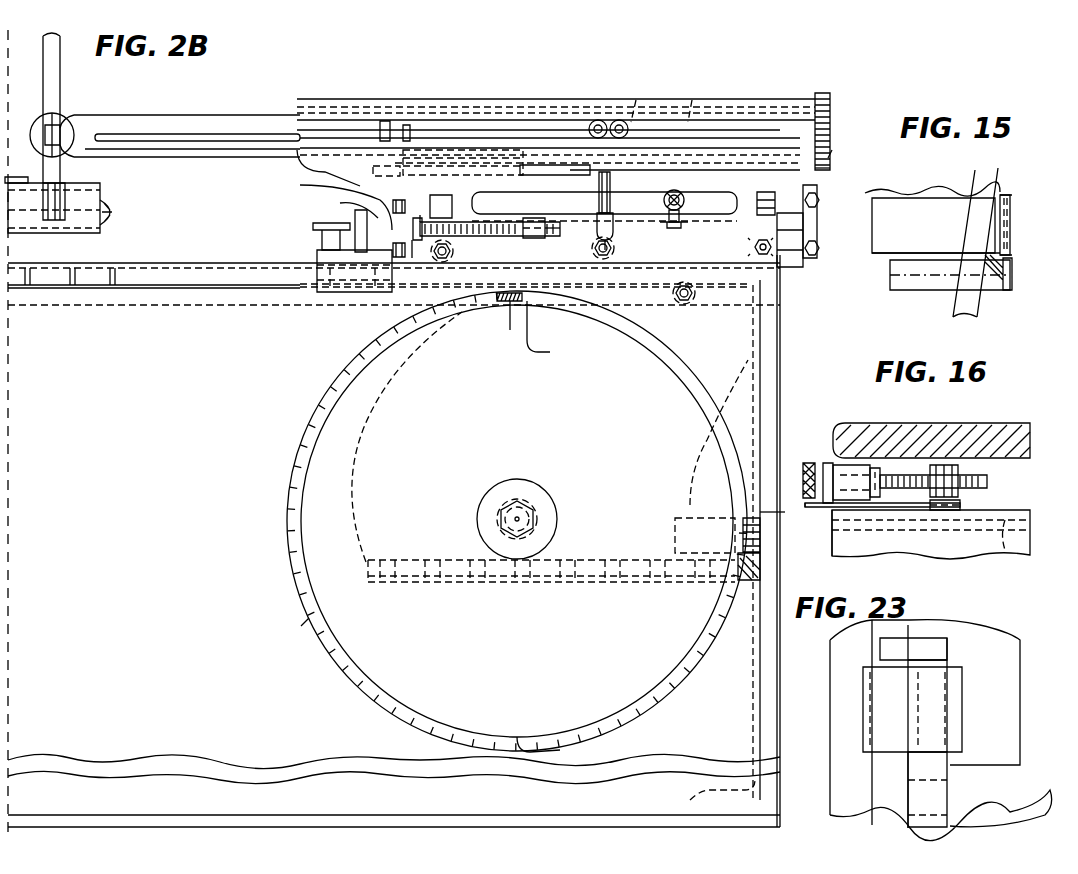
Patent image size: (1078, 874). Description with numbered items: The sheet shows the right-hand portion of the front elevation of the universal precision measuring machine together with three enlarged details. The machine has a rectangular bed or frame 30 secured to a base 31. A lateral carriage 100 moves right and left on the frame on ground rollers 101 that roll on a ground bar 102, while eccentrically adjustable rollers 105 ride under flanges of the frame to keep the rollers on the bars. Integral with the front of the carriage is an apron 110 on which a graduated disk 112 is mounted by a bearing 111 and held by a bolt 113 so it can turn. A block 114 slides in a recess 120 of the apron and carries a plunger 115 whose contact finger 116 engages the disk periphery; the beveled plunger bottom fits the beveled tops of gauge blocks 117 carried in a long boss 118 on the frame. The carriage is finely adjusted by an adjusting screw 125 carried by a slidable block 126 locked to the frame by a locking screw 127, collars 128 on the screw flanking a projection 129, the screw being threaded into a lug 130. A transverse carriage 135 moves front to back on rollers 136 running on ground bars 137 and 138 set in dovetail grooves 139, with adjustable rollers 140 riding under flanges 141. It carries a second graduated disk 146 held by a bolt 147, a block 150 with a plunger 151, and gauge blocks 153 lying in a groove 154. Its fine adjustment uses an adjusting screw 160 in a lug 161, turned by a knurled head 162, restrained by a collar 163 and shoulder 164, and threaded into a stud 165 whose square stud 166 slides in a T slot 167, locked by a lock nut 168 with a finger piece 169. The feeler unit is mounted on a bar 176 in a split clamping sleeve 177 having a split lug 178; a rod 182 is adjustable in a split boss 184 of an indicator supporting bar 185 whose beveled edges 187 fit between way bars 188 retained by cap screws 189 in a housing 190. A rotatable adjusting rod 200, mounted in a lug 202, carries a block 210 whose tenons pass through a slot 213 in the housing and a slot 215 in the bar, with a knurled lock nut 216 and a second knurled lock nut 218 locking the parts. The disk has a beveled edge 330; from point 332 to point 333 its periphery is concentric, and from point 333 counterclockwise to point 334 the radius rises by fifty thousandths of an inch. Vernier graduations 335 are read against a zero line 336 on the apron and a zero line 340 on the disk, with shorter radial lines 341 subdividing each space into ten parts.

In FIG. 2B, the rectangular bed or frame 30 is at (72, 300).
In FIG. 2B, the base 31 is at (778, 815).
In FIG. 2B, the lateral carriage 100 is at (524, 226).
In FIG. 16, the lateral carriage 100 is at (990, 556).
In FIG. 2B, the accurately ground rollers 101 is at (452, 252).
In FIG. 2B, the ground bar 102 is at (168, 254).
In FIG. 2B, the eccentrically adjustable rollers 105 is at (686, 304).
In FIG. 2B, the apron 110 is at (735, 372).
In FIG. 15, the apron 110 is at (921, 192).
In FIG. 23, the apron 110 is at (980, 648).
In FIG. 2B, the bearing 111 is at (535, 492).
In FIG. 2B, the graduated disk 112 is at (300, 446).
In FIG. 15, the graduated disk 112 is at (960, 305).
In FIG. 23, the graduated disk 112 is at (880, 775).
In FIG. 2B, the bolt 113 is at (498, 502).
In FIG. 2B, the block 114 is at (672, 530).
In FIG. 15, the block 114 is at (883, 222).
In FIG. 2B, the plunger 115 is at (765, 514).
In FIG. 15, the plunger 115 is at (1010, 205).
In FIG. 16, the plunger 115 is at (783, 520).
In FIG. 23, the plunger 115 is at (945, 652).
In FIG. 15, the contact finger 116 is at (1000, 195).
In FIG. 23, the contact finger 116 is at (880, 650).
In FIG. 2B, the gauge blocks 117 is at (500, 578).
In FIG. 15, the gauge blocks 117 is at (1005, 290).
In FIG. 23, the gauge blocks 117 is at (925, 800).
In FIG. 2B, the long lug or boss 118 is at (470, 585).
In FIG. 23, the long lug or boss 118 is at (985, 815).
In FIG. 15, the recess 120 is at (975, 170).
In FIG. 23, the recess 120 is at (962, 706).
In FIG. 2B, the adjusting screw 125 is at (512, 232).
In FIG. 2B, the slidable block 126 is at (318, 290).
In FIG. 2B, the locking screw 127 is at (313, 235).
In FIG. 2B, the collars 128 is at (355, 215).
In FIG. 2B, the projection 129 is at (372, 212).
In FIG. 2B, the lug 130 is at (530, 237).
In FIG. 2B, the transverse carriage 135 is at (832, 156).
In FIG. 16, the transverse carriage 135 is at (990, 435).
In FIG. 2B, the accurately ground rollers 136 is at (400, 200).
In FIG. 2B, the ground bar 137 is at (442, 215).
In FIG. 2B, the ground bar 138 is at (796, 208).
In FIG. 2B, the dovetail grooves 139 is at (760, 232).
In FIG. 2B, the eccentrically adjustable rollers 140 is at (426, 225).
In FIG. 2B, the flanges 141 is at (412, 258).
In FIG. 2B, the graduated disk 146 is at (840, 172).
In FIG. 2B, the bolt 147 is at (590, 176).
In FIG. 2B, the block 150 is at (612, 215).
In FIG. 2B, the plunger 151 is at (610, 190).
In FIG. 2B, the gauge blocks 153 is at (600, 218).
In FIG. 2B, the groove 154 is at (612, 238).
In FIG. 16, the adjusting screw 160 is at (987, 481).
In FIG. 16, the lug 161 is at (840, 498).
In FIG. 2B, the knurled head 162 is at (670, 192).
In FIG. 16, the knurled head 162 is at (808, 462).
In FIG. 16, the collar 163 is at (878, 498).
In FIG. 16, the shoulder 164 is at (828, 462).
In FIG. 16, the stud 165 is at (943, 465).
In FIG. 16, the square stud 166 is at (960, 545).
In FIG. 2B, the T slot 167 is at (682, 227).
In FIG. 16, the T slot 167 is at (1005, 550).
In FIG. 2B, the lock nut 168 is at (680, 214).
In FIG. 16, the lock nut 168 is at (960, 505).
In FIG. 16, the finger piece 169 is at (822, 507).
In FIG. 2B, the bar 176 is at (104, 193).
In FIG. 2B, the split clamping sleeve 177 is at (70, 220).
In FIG. 2B, the split lug 178 is at (40, 218).
In FIG. 2B, the rod 182 is at (52, 75).
In FIG. 2B, the split boss 184 is at (56, 118).
In FIG. 2B, the indicator supporting bar 185 is at (84, 115).
In FIG. 2B, the beveled edges 187 is at (143, 116).
In FIG. 2B, the way bars 188 is at (298, 118).
In FIG. 2B, the cap screws 189 is at (297, 99).
In FIG. 2B, the indicator supporting bar housing 190 is at (342, 107).
In FIG. 2B, the rotatable adjusting rod 200 is at (420, 107).
In FIG. 2B, the lug 202 is at (830, 103).
In FIG. 2B, the block 210 is at (640, 108).
In FIG. 2B, the slot 213 is at (695, 110).
In FIG. 2B, the slot 215 is at (180, 134).
In FIG. 2B, the knurled lock nut 216 is at (622, 119).
In FIG. 2B, the knurled lock nut 218 is at (598, 119).
In FIG. 2B, the beveled edge 330 is at (290, 543).
In FIG. 2B, the point 332 is at (517, 737).
In FIG. 2B, the point 333 is at (748, 512).
In FIG. 2B, the point 334 is at (560, 750).
In FIG. 2B, the vernier graduations 335 is at (313, 618).
In FIG. 2B, the zero line 336 is at (522, 297).
In FIG. 2B, the zero line 340 is at (530, 305).
In FIG. 2B, the shorter radial lines 341 is at (497, 305).